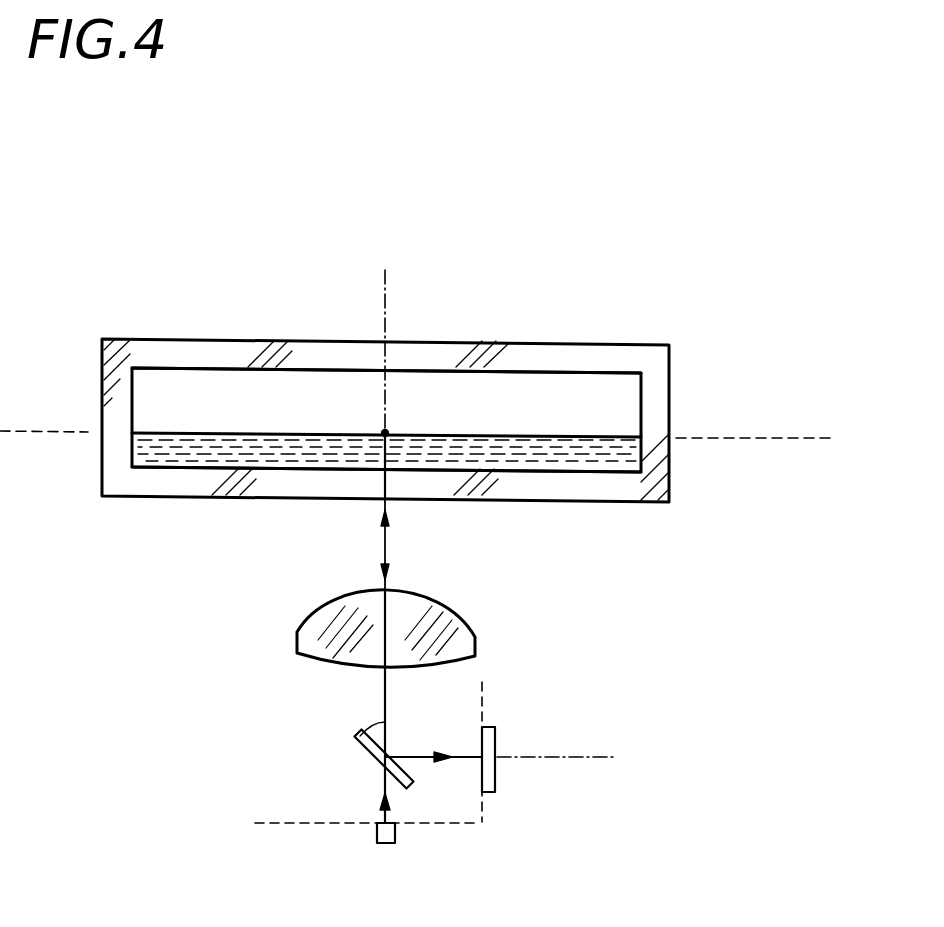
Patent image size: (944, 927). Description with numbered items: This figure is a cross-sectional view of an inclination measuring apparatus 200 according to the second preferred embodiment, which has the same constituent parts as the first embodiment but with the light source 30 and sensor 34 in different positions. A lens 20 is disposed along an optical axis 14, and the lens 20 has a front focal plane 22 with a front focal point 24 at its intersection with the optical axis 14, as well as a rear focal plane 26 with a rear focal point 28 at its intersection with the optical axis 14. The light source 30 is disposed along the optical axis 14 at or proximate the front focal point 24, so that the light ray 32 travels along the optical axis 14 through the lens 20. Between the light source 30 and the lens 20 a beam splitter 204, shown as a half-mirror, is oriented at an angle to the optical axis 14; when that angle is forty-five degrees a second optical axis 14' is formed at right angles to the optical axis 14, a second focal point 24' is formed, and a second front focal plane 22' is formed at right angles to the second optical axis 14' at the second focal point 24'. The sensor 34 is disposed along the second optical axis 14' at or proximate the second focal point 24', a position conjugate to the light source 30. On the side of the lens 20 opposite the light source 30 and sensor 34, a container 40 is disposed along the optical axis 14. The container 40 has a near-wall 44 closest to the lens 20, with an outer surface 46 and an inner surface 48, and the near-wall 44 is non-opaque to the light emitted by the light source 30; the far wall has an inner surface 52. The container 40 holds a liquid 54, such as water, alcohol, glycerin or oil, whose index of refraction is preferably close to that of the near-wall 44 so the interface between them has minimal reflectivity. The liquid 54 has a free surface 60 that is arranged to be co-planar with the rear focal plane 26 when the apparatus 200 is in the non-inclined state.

The inclination measuring apparatus 200 is at (463, 224).
The container 40 is at (103, 328).
The near-wall 44 is at (553, 485).
The outer surface 46 is at (645, 503).
The inner surface 48 is at (445, 470).
The inner surface 52 is at (435, 372).
The liquid 54 is at (180, 446).
The free surface 60 is at (547, 436).
The rear focal point 28 is at (383, 431).
The optical axis 14 is at (351, 419).
The rear focal plane 26 is at (818, 438).
The lens 20 is at (297, 636).
The light ray 32 is at (385, 687).
The beam splitter 204 is at (357, 745).
The second focal point 24' is at (471, 820).
The sensor 34 is at (496, 727).
The second front focal plane 22' is at (532, 725).
The second optical axis 14' is at (563, 797).
The front focal point 24 is at (433, 825).
The front focal plane 22 is at (387, 875).
The light source 30 is at (377, 840).